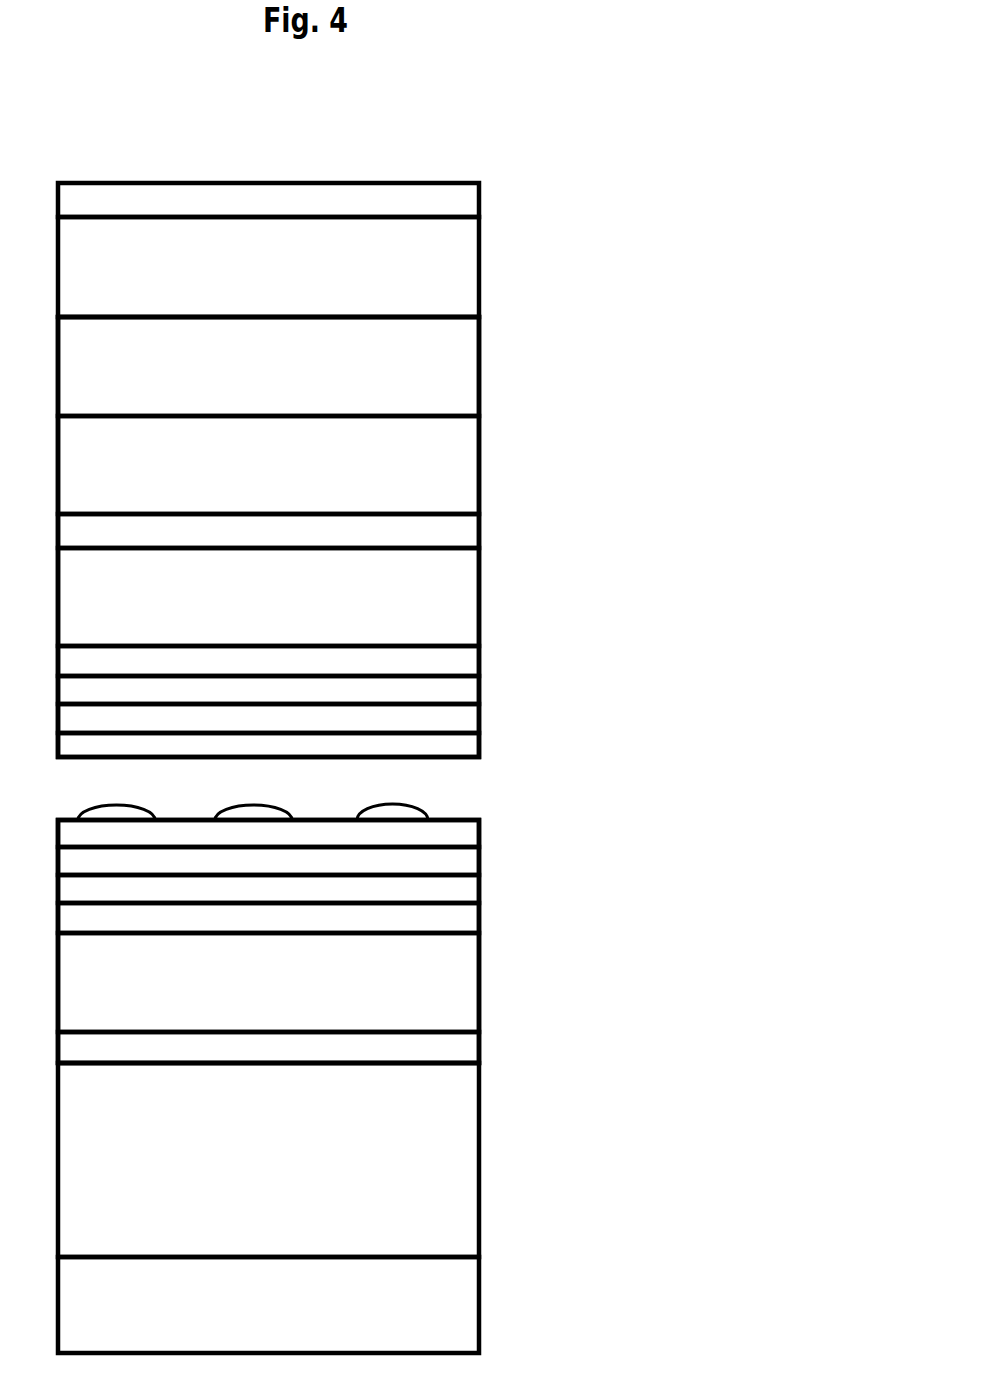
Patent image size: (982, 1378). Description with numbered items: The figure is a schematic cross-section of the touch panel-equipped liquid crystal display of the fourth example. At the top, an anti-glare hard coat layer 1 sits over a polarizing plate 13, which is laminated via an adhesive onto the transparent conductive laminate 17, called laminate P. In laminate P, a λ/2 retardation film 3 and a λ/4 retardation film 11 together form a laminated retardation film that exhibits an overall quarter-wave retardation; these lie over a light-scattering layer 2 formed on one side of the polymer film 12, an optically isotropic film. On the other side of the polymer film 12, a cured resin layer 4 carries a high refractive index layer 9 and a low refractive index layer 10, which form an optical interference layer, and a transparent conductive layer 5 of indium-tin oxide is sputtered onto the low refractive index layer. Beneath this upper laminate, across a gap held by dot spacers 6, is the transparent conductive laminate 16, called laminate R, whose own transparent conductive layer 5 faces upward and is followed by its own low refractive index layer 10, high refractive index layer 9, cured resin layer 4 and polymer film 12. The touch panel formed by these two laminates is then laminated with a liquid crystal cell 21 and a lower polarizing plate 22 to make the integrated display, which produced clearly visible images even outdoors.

The anti-glare hard coat layer 1 is at (455, 202).
The light-scattering layer 2 is at (445, 527).
The λ/2 retardation film 3 is at (447, 367).
The cured resin layer 4 is at (450, 660).
The transparent conductive layer 5 is at (450, 838).
The dot spacer 6 is at (423, 810).
The high refractive index layer 9 is at (453, 688).
The low refractive index layer 10 is at (455, 718).
The λ/4 retardation film 11 is at (435, 462).
The polymer film 12 is at (445, 595).
The polarizing plate 13 is at (677, 185).
The transparent conductive laminate 16 is at (675, 824).
The transparent conductive laminate 17 is at (677, 322).
The liquid crystal cell 21 is at (447, 1143).
The polarizing plate 22 is at (447, 1300).